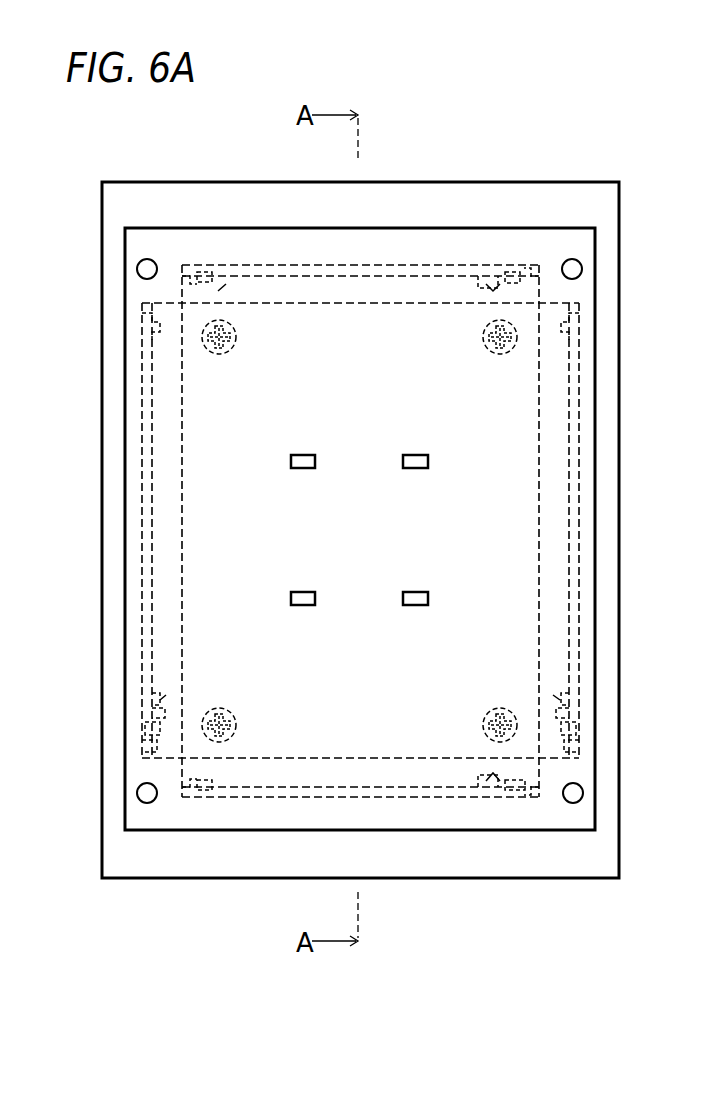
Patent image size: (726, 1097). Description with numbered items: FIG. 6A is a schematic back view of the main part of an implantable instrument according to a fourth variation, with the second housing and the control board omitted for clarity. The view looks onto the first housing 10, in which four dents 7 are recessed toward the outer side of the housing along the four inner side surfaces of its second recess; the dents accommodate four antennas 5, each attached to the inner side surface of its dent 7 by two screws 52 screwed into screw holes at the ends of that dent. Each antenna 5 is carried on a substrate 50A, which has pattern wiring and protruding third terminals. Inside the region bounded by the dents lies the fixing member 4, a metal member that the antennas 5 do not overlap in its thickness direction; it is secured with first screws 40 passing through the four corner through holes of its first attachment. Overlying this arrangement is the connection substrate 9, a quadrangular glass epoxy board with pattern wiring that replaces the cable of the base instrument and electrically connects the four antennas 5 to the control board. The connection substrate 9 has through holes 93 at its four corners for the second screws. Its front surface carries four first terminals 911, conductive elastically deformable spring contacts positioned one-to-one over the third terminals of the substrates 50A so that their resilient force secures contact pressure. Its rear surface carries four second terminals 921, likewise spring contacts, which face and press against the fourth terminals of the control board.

The first housing 10 is at (638, 170).
The connection substrate 9 is at (385, 228).
The through holes 93 is at (138, 267).
The fixing member 4 is at (314, 296).
The antenna 5 is at (358, 280).
The dent 7 is at (398, 290).
The substrate 50A is at (272, 268).
The screw 52 is at (218, 288).
The first terminal 911 is at (494, 286).
The second terminal 921 is at (410, 455).
The first screw 40 is at (229, 353).